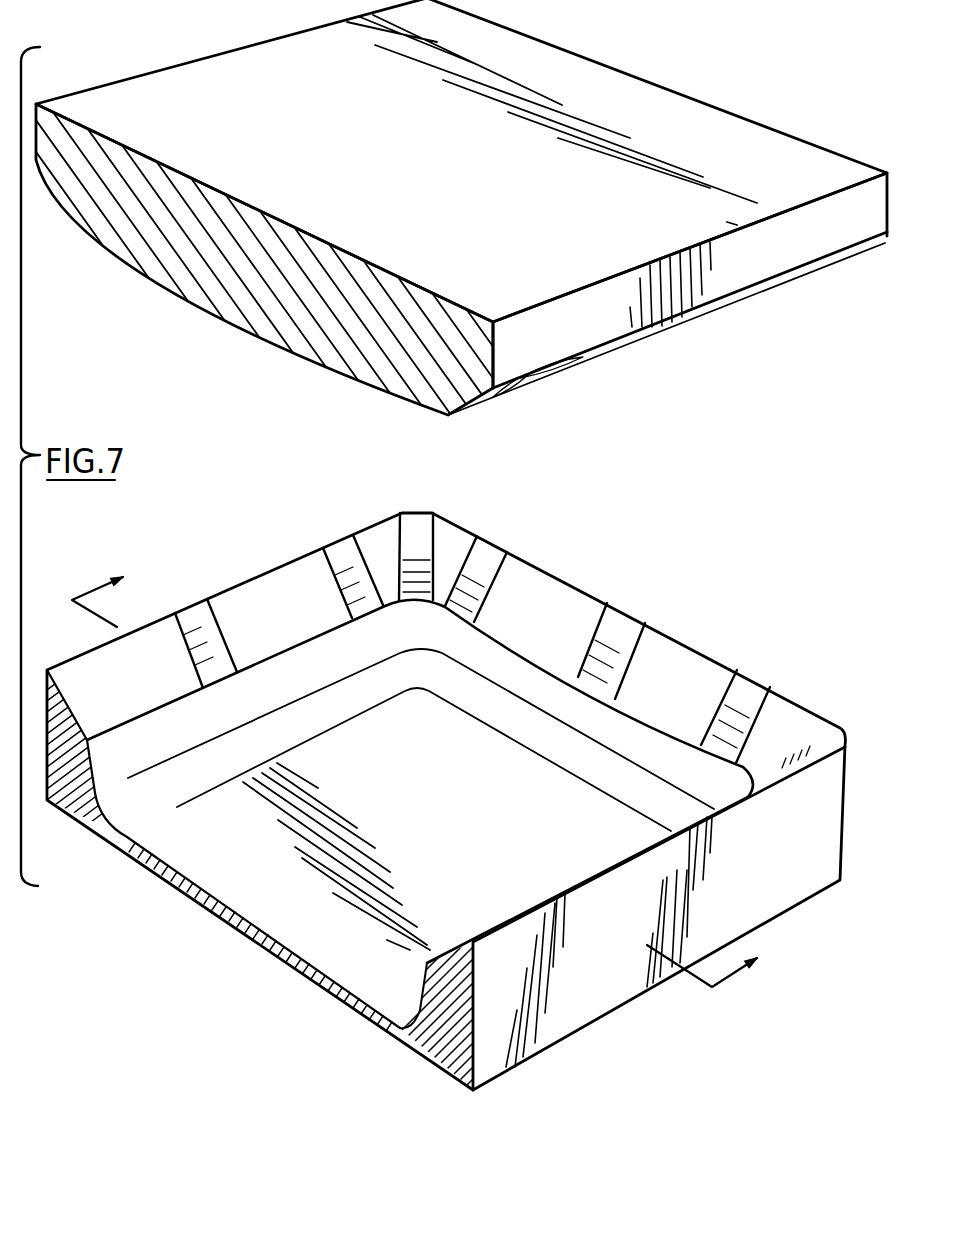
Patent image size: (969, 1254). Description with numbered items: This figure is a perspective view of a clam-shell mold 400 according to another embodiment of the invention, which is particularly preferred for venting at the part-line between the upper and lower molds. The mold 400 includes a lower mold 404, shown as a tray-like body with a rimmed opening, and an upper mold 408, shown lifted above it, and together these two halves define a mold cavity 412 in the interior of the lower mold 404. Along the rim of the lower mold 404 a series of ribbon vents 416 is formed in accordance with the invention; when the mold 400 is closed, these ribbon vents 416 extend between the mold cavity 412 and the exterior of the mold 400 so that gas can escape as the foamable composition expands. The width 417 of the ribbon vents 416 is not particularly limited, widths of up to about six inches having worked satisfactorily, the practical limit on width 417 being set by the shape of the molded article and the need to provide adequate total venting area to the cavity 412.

The clam-shell mold 400 is at (742, 85).
The lower mold 404 is at (772, 908).
The upper mold 408 is at (800, 252).
The mold cavity 412 is at (452, 823).
The ribbon vents 416 is at (213, 610).
The vent width 417 is at (222, 629).